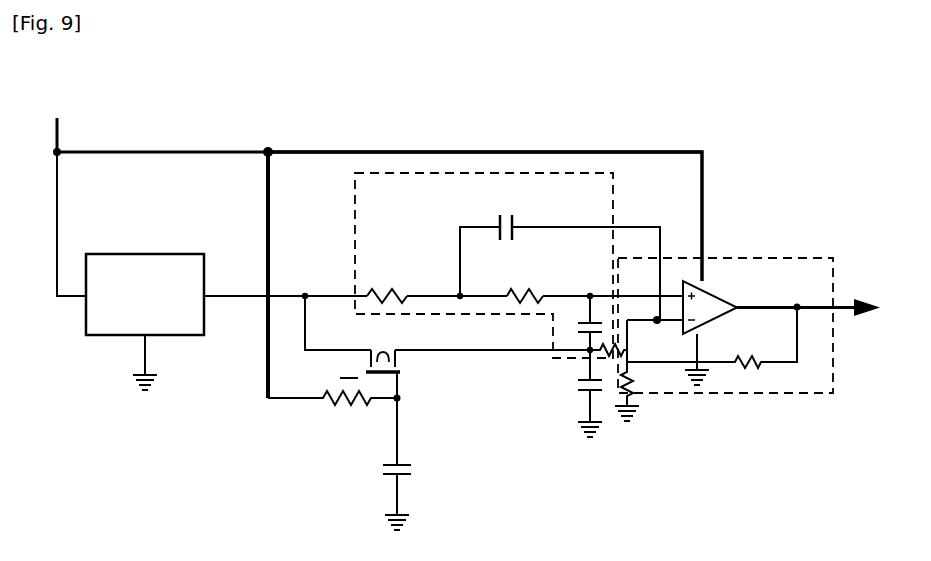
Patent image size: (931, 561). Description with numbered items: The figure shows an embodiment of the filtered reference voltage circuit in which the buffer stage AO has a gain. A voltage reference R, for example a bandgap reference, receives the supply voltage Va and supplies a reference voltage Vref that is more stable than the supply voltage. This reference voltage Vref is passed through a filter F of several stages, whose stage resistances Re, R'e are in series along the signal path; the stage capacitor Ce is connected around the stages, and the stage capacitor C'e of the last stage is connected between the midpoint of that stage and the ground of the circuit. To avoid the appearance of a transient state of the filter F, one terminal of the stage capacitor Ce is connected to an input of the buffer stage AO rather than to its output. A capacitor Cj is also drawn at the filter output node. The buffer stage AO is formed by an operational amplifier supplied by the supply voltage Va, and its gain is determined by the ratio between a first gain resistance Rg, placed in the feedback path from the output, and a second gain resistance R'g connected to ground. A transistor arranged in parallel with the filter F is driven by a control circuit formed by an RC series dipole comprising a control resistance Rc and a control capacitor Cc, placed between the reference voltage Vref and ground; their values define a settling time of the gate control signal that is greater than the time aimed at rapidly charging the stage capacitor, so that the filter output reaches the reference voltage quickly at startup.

The supply voltage Va is at (55, 107).
The reference voltage Vref is at (250, 280).
The voltage reference R is at (145, 322).
The filter F is at (580, 170).
The stage capacitor Ce is at (560, 252).
The stage resistance Re is at (384, 282).
The stage resistance of the last stage R'e is at (513, 282).
The capacitor Cj is at (586, 334).
The stage capacitor of the last stage C'e is at (560, 428).
The control resistance Rc is at (334, 419).
The control capacitor Cc is at (419, 464).
The second gain resistance R'g is at (648, 388).
The first gain resistance Rg is at (747, 371).
The buffer stage AO is at (822, 395).